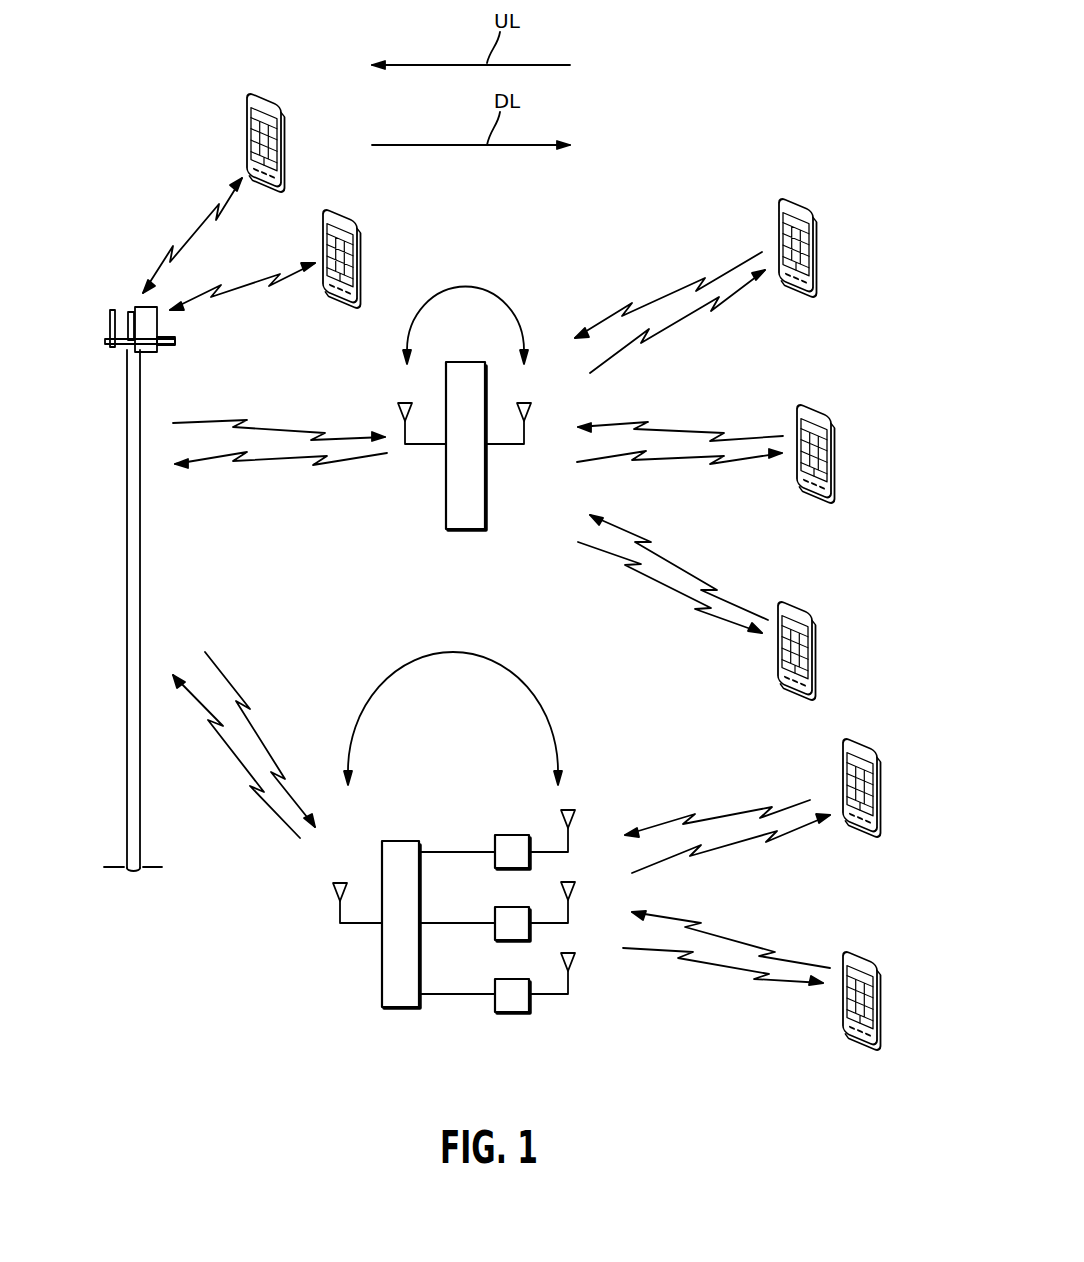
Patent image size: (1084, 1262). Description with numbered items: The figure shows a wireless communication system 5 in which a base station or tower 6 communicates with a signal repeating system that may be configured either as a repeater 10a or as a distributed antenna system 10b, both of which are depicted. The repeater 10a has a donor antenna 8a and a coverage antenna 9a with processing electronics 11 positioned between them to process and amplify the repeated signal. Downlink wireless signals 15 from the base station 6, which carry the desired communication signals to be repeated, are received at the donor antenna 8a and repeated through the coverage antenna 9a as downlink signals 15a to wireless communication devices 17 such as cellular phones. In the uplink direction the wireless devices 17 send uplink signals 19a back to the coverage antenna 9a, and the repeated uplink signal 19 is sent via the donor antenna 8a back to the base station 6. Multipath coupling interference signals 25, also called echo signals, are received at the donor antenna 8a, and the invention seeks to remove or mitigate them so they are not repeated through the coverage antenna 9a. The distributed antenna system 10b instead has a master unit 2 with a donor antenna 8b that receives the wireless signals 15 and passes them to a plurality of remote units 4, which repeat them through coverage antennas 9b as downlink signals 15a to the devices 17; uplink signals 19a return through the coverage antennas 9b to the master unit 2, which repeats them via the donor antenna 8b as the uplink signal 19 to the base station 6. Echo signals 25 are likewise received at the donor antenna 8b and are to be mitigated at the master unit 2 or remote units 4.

The master unit 2 is at (397, 838).
The remote unit 4 is at (512, 835).
The wireless communication system 5 is at (580, 213).
The base station 6 is at (127, 443).
The donor antenna 8a is at (405, 402).
The donor antenna 8b is at (340, 882).
The coverage antenna 9a is at (524, 402).
The coverage antenna 9b is at (569, 809).
The repeater 10a is at (467, 392).
The distributed antenna system 10b is at (463, 859).
The processing electronics 11 is at (463, 358).
The downlink wireless signals 15 is at (278, 430).
The downlink signals 15a is at (682, 321).
The wireless communication devices 17 is at (288, 131).
The uplink signal 19 is at (270, 460).
The uplink signal 19a is at (672, 293).
The multipath coupling interference signals 25 is at (438, 291).